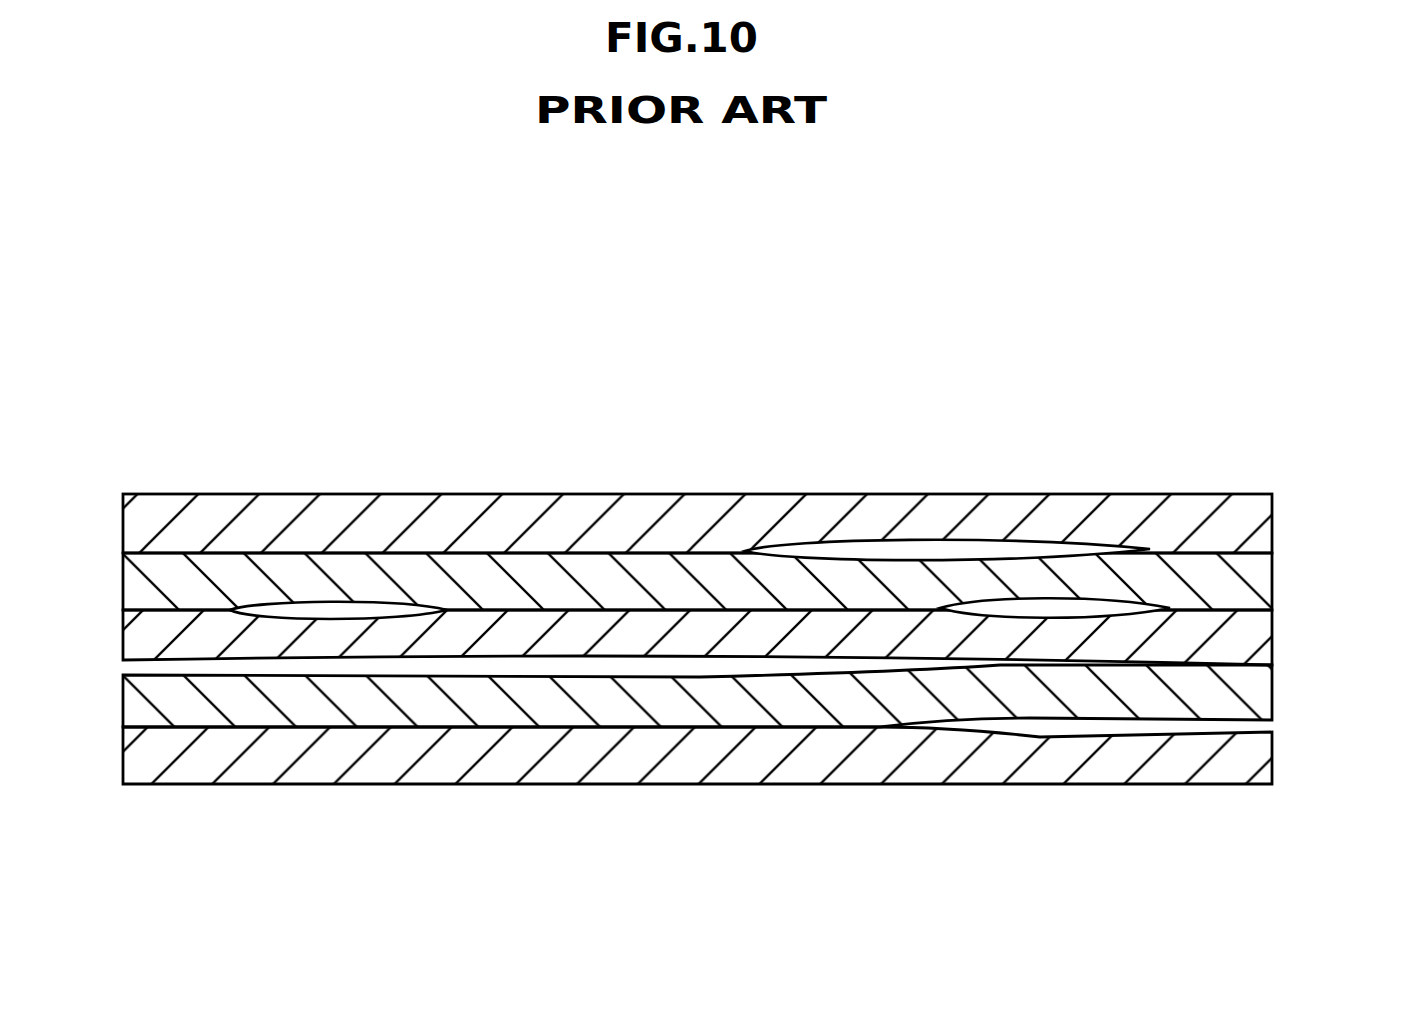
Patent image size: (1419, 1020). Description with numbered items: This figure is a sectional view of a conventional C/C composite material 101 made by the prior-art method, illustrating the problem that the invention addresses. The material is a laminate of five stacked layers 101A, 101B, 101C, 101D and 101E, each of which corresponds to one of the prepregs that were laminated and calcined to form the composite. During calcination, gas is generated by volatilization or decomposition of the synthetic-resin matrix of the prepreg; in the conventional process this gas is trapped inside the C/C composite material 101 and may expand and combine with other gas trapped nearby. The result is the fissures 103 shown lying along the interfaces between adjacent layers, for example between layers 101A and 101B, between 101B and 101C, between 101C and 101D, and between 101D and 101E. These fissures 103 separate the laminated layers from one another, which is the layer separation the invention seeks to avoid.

The C/C composite material 101 is at (152, 378).
The layer of the C/C composite material 101A is at (1263, 522).
The layer of the C/C composite material 101B is at (1263, 579).
The layer of the C/C composite material 101C is at (1263, 639).
The layer of the C/C composite material 101D is at (1263, 695).
The layer of the C/C composite material 101E is at (1263, 755).
The fissures 103 is at (352, 610).